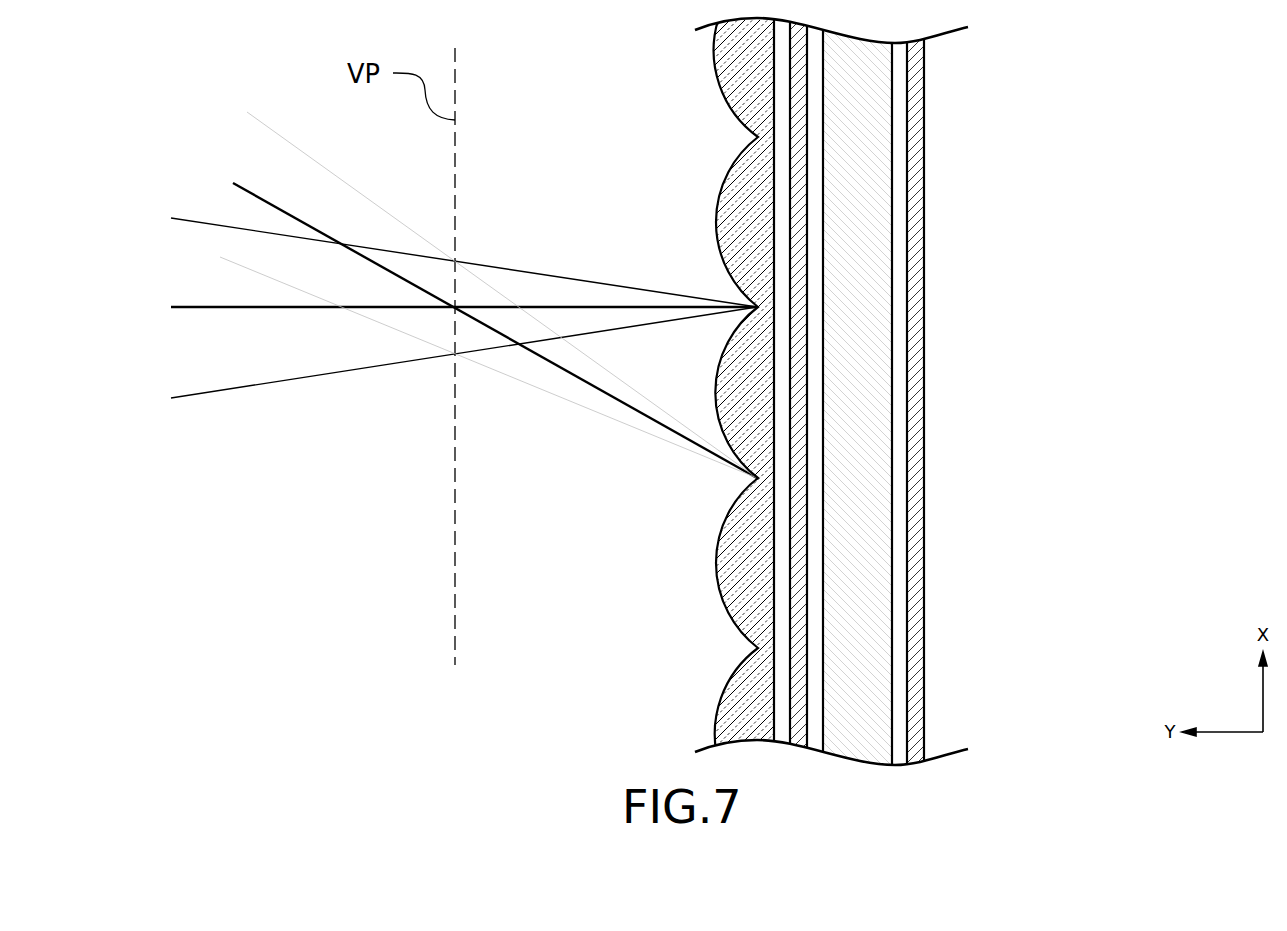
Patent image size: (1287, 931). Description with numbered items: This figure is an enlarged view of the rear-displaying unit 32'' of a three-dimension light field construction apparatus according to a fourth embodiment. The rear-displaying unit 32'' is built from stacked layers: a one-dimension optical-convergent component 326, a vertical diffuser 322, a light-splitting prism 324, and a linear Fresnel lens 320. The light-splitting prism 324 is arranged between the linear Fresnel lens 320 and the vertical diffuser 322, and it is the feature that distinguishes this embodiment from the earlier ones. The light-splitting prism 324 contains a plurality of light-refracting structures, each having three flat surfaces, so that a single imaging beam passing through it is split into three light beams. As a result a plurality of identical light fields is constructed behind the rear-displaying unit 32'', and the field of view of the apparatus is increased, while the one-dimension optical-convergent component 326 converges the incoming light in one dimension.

The rear-displaying unit 32'' is at (856, 400).
The linear Fresnel lens 320 is at (912, 210).
The vertical diffuser 322 is at (800, 83).
The light-splitting prism 324 is at (862, 160).
The one-dimension optical-convergent component 326 is at (750, 183).